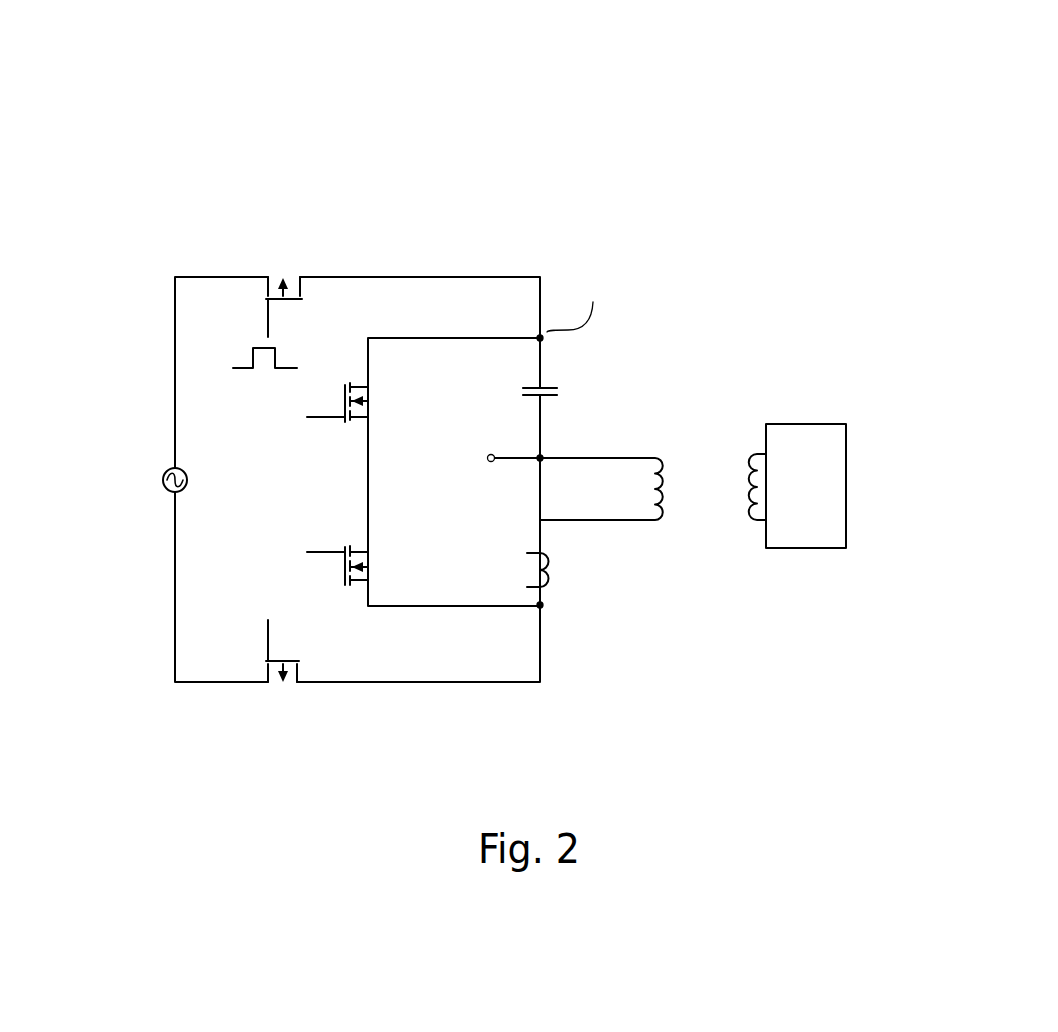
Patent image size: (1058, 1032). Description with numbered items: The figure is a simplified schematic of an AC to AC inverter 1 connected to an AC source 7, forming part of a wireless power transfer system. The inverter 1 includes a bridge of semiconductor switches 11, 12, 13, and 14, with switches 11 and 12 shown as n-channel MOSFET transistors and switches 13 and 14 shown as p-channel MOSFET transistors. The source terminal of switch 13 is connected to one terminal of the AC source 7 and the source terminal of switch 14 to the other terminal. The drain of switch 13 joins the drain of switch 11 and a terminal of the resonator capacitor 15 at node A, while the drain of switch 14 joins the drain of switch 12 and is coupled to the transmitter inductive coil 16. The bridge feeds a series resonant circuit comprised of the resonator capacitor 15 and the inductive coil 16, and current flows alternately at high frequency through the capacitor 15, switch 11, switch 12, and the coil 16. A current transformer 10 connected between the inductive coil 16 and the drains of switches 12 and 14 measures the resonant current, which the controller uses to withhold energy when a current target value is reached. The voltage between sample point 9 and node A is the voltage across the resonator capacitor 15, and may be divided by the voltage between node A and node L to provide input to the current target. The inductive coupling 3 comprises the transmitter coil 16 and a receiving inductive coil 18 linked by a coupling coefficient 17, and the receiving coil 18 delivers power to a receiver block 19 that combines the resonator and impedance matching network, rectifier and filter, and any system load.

The inverter 1 is at (473, 75).
The inductive coupling 3 is at (832, 464).
The AC source 7 is at (165, 498).
The sample point 9 is at (490, 447).
The current transformer 10 is at (555, 590).
The switch 11 is at (348, 367).
The switch 12 is at (338, 568).
The switch 13 is at (260, 292).
The switch 14 is at (310, 668).
The resonator capacitor 15 is at (553, 372).
The transmitter inductive coil 16 is at (658, 452).
The coupling coefficient 17 is at (707, 505).
The receiving inductive coil 18 is at (753, 450).
The receiver block 19 is at (819, 488).